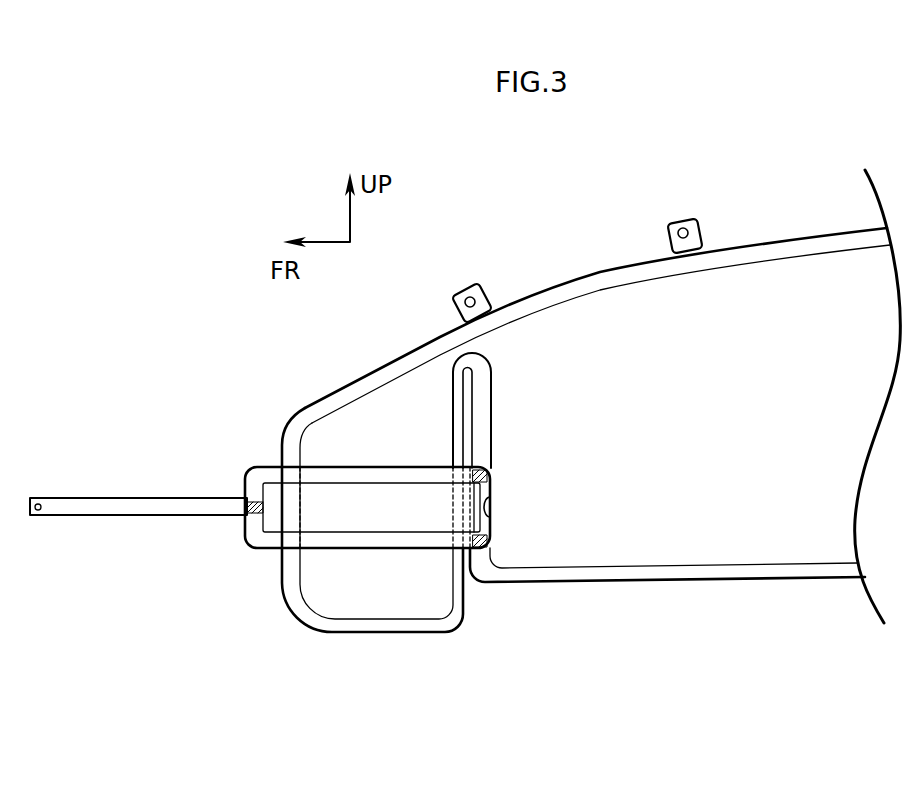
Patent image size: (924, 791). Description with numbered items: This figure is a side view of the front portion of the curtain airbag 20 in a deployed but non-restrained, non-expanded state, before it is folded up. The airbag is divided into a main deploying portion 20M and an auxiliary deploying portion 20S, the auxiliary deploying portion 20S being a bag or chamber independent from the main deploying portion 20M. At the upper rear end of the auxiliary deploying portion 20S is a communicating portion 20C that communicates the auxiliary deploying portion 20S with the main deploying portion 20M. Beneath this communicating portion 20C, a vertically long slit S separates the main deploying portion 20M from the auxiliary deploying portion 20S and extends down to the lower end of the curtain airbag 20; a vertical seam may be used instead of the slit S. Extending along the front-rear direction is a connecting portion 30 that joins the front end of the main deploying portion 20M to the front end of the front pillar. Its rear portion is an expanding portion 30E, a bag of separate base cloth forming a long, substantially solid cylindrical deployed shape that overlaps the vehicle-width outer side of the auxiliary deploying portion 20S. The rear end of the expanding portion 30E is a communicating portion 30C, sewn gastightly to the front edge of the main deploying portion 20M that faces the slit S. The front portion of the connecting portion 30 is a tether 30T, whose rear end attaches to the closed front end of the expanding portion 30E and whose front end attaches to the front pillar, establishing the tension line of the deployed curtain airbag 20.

The curtain airbag 20 is at (591, 427).
The communicating portion 20C is at (467, 348).
The main deploying portion 20M is at (612, 530).
The auxiliary deploying portion 20S is at (370, 605).
The slit S is at (468, 417).
The connecting portion 30 is at (314, 450).
The expanding portion 30E is at (330, 508).
The tether 30T is at (193, 508).
The communicating portion 30C is at (483, 498).